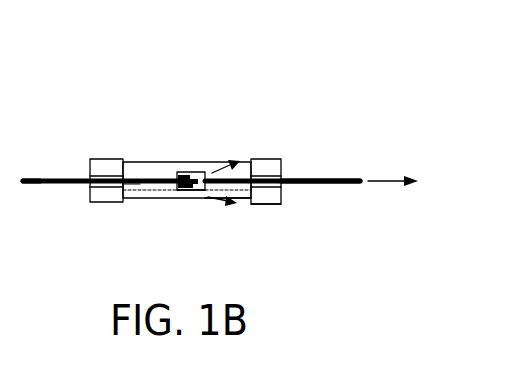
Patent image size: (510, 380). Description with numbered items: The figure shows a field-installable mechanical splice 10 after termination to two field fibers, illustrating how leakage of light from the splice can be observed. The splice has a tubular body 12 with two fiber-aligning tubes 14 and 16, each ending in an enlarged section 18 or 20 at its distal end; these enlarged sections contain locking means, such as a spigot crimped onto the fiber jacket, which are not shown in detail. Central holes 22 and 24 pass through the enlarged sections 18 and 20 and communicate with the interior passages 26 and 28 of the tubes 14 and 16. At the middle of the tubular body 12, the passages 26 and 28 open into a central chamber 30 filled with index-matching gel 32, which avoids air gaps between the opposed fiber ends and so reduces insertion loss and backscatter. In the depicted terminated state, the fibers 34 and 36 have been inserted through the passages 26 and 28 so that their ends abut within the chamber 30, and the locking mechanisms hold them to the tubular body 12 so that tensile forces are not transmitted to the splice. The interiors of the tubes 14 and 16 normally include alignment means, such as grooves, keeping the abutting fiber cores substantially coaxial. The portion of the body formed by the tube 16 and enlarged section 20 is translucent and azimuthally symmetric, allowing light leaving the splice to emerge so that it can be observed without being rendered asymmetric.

The field-installable mechanical splice 10 is at (296, 31).
The tubular body 12 is at (153, 162).
The fiber-aligning tube 14 is at (160, 189).
The fiber-aligning tube 16 is at (216, 197).
The enlarged section 18 is at (87, 160).
The enlarged section 20 is at (278, 159).
The central hole 22 is at (188, 209).
The central hole 24 is at (271, 192).
The interior passage 26 is at (127, 187).
The interior passage 28 is at (206, 176).
The central chamber 30 is at (196, 191).
The index-matching gel 32 is at (179, 172).
The fiber 34 is at (31, 179).
The fiber 36 is at (336, 178).